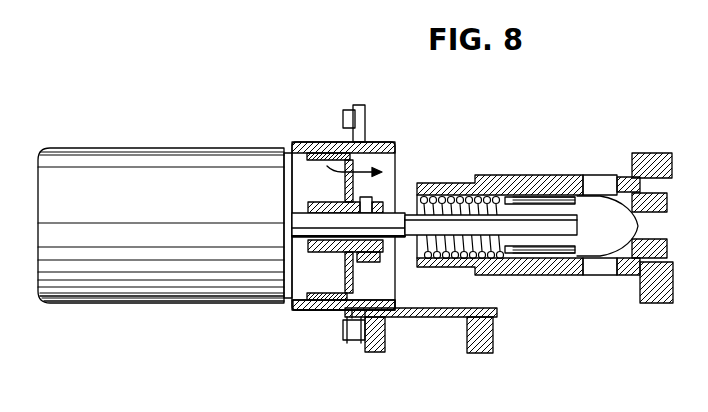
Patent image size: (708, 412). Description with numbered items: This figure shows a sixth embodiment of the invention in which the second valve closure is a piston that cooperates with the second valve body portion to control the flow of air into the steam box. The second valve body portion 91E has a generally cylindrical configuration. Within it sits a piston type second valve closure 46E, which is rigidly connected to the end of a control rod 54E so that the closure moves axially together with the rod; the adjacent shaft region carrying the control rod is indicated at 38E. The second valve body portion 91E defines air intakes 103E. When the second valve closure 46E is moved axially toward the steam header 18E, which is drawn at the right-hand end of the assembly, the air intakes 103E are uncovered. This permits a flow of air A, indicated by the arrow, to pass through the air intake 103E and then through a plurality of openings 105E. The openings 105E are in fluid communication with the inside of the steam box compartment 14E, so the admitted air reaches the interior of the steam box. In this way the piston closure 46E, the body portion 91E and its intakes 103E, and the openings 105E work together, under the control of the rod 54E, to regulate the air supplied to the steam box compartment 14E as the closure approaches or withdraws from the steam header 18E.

The second valve closure 46E is at (322, 140).
The air intakes 103E is at (341, 140).
The flow of air A is at (373, 142).
The shaft 38E is at (397, 216).
The control rod 54E is at (302, 228).
The second valve body portion 91E is at (316, 309).
The openings 105E is at (352, 284).
The steam box compartment 14E is at (473, 301).
The steam header 18E is at (658, 155).